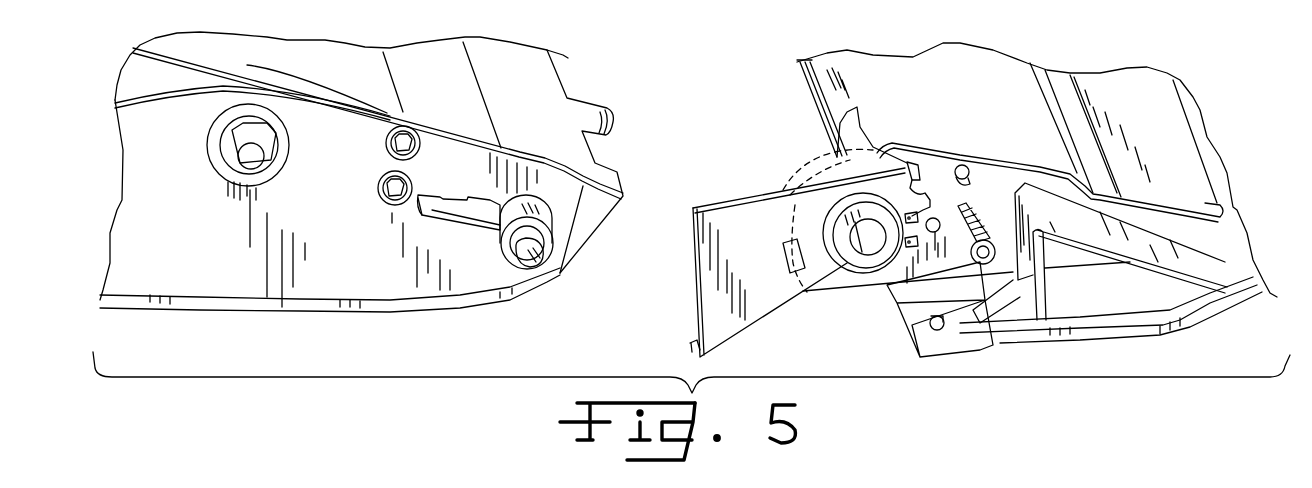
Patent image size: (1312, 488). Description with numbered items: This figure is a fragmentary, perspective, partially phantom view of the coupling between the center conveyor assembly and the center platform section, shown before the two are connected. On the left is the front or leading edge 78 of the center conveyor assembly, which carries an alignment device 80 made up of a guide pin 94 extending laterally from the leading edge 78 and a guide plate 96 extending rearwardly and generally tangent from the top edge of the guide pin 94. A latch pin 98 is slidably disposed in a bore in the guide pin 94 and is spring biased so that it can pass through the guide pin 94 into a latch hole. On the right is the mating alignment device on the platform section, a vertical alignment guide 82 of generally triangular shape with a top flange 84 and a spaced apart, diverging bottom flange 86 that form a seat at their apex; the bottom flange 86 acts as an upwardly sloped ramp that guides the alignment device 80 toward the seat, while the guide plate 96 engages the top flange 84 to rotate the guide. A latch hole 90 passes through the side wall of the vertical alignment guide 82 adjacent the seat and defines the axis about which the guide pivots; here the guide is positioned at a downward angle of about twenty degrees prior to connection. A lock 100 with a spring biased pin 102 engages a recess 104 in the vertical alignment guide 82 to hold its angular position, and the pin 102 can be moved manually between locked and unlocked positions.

The leading edge 78 is at (276, 272).
The alignment device 80 is at (542, 289).
The vertical alignment guide 82 is at (750, 191).
The top flange 84 is at (713, 202).
The bottom flange 86 is at (693, 344).
The latch hole 90 is at (868, 244).
The guide pin 94 is at (540, 217).
The guide plate 96 is at (450, 220).
The latch pin 98 is at (542, 258).
The lock 100 is at (939, 136).
The spring biased pin 102 is at (975, 182).
The recess 104 is at (907, 170).